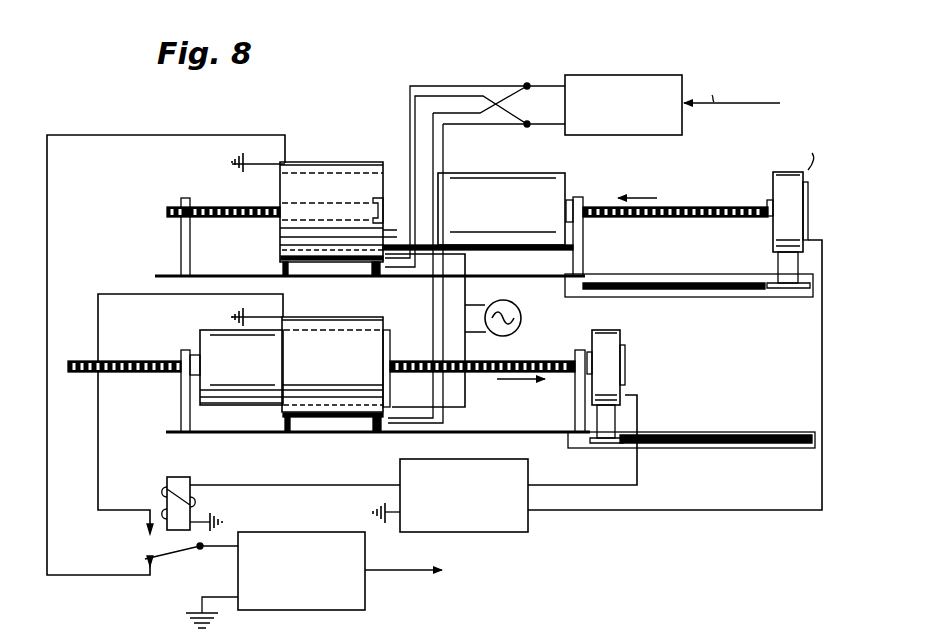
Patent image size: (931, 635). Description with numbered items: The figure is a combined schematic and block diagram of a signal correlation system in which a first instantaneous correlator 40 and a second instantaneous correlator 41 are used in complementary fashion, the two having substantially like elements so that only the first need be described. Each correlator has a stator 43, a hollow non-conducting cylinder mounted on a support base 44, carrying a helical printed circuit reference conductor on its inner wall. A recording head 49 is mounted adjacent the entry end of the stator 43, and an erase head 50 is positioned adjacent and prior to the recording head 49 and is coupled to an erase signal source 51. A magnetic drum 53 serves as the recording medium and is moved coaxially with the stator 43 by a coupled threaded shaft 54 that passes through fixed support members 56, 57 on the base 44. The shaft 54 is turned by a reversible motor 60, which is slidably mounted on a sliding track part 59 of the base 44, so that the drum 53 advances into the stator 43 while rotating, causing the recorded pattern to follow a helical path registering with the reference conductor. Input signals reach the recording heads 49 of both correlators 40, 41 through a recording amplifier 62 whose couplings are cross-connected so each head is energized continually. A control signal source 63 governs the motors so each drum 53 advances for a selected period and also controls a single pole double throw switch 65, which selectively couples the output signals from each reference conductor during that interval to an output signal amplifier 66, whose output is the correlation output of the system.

The first instantaneous correlator 40 is at (380, 140).
The second instantaneous correlator 41 is at (422, 312).
The stator 43 is at (356, 163).
The support base 44 is at (283, 270).
The recording head 49 is at (383, 278).
The erase head 50 is at (350, 262).
The erase signal source 51 is at (515, 330).
The magnetic drum 53 is at (519, 173).
The threaded shaft 54 is at (673, 205).
The fixed support member 56 is at (580, 197).
The fixed support member 57 is at (186, 198).
The sliding track part 59 is at (738, 283).
The reversible motor 60 is at (773, 190).
The recording amplifier 62 is at (645, 75).
The control signal source 63 is at (528, 461).
The switch 65 is at (205, 476).
The output signal amplifier 66 is at (318, 533).